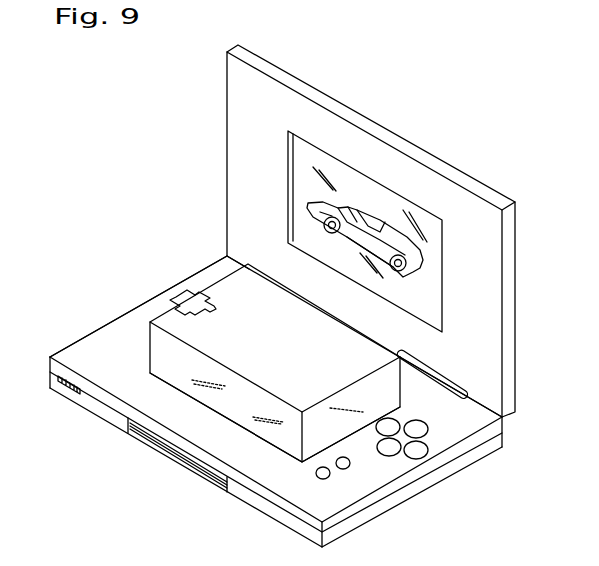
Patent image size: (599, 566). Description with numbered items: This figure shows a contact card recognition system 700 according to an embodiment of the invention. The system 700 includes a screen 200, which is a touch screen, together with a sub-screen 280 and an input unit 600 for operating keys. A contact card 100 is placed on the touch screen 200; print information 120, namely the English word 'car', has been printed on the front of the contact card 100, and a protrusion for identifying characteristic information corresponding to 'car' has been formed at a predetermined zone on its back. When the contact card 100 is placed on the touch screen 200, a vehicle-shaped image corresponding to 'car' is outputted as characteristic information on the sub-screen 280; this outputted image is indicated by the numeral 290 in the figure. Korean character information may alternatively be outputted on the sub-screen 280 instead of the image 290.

The contact card 100 is at (156, 303).
The print information 120 is at (243, 311).
The screen 200 is at (233, 405).
The sub-screen 280 is at (290, 152).
The displayed image 290 is at (357, 207).
The input unit 600 is at (177, 284).
The contact card recognition system 700 is at (87, 352).